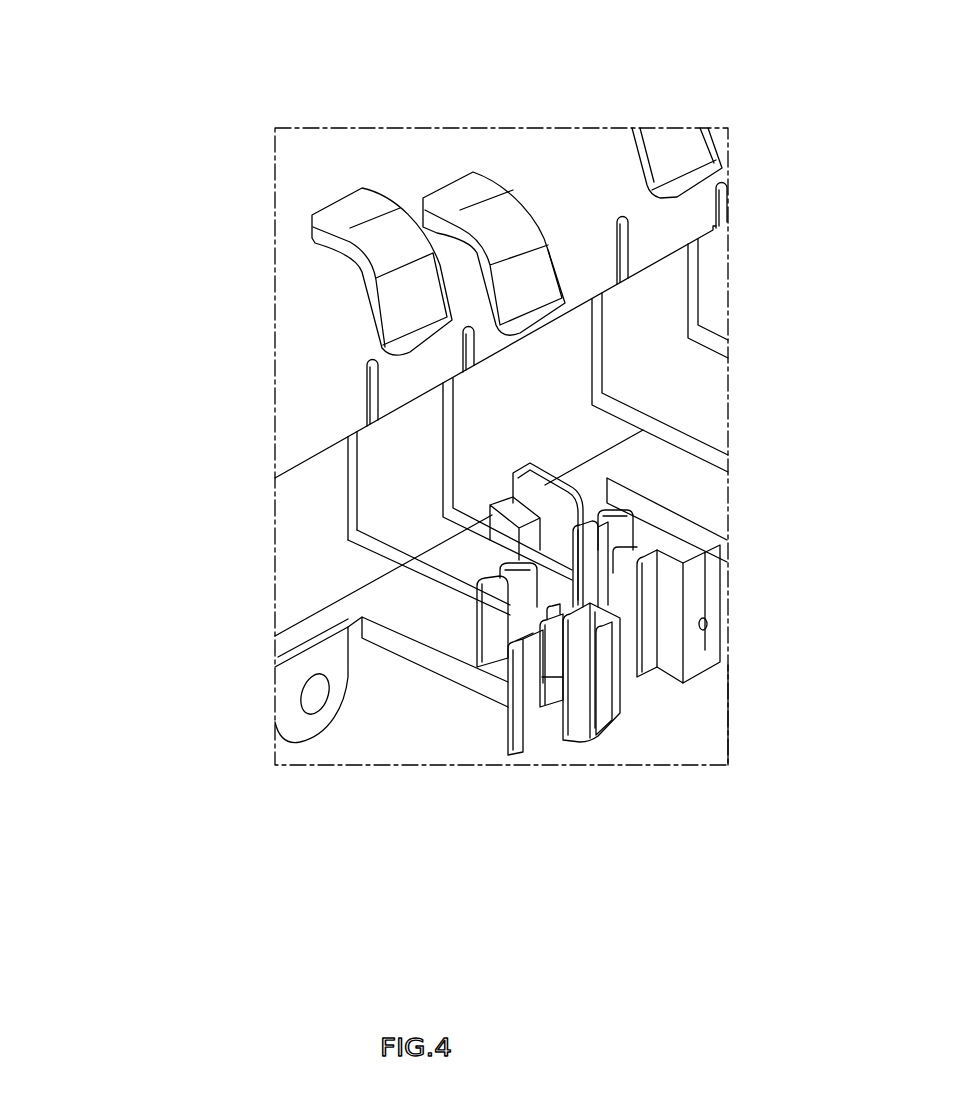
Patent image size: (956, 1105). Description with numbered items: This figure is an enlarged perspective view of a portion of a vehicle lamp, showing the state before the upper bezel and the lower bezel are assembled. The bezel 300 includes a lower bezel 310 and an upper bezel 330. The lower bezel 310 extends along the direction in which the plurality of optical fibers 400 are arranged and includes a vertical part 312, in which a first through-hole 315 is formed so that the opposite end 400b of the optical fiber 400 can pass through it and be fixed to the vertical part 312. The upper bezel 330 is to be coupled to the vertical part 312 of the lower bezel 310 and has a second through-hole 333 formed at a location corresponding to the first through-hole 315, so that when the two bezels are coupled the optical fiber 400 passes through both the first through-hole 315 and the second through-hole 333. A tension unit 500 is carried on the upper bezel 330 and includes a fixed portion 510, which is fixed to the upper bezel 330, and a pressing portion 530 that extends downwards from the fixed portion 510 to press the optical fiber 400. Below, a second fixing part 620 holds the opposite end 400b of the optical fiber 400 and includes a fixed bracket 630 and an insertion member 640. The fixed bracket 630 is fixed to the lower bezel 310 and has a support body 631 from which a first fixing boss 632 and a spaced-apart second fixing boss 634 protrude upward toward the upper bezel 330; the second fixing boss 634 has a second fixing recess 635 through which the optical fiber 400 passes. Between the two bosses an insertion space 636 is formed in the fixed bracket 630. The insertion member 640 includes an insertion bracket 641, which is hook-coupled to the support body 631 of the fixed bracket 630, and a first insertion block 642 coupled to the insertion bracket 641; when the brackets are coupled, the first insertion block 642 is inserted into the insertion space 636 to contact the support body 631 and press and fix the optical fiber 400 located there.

The bezel 300 is at (137, 372).
The lower bezel 310 is at (180, 576).
The vertical part 312 is at (300, 562).
The first through-hole 315 is at (345, 476).
The upper bezel 330 is at (296, 282).
The second through-hole 333 is at (373, 386).
The optical fiber 400 is at (180, 620).
The opposite end of the optical fiber 400b is at (417, 573).
The tension unit 500 is at (455, 40).
The fixed portion 510 is at (360, 210).
The pressing portion 530 is at (420, 290).
The second fixing part 620 is at (137, 438).
The fixed bracket 630 is at (298, 836).
The support body 631 is at (412, 648).
The first fixing boss 632 is at (493, 603).
The second fixing boss 634 is at (628, 612).
The second fixing recess 635 is at (625, 652).
The insertion space 636 is at (630, 688).
The insertion member 640 is at (600, 862).
The insertion bracket 641 is at (532, 742).
The first insertion block 642 is at (548, 677).